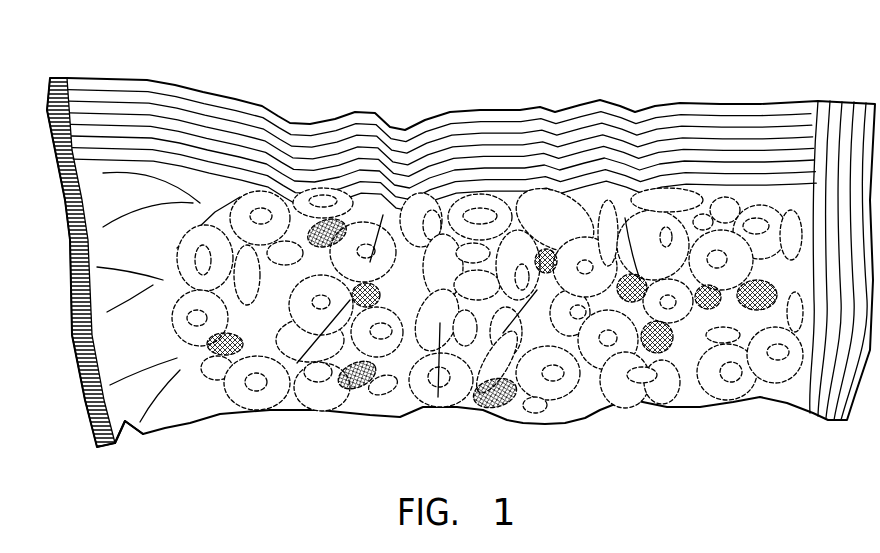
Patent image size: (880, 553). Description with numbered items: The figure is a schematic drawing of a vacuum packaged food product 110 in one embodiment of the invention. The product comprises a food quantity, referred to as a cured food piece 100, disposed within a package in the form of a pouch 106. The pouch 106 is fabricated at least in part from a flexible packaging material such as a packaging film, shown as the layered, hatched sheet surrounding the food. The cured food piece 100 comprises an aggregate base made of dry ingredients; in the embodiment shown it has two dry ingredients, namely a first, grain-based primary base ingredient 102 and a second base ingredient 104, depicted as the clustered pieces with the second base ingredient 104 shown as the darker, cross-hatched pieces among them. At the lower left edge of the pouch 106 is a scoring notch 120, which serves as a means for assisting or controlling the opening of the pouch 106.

The cured food piece 100 is at (197, 397).
The primary base ingredient 102 is at (258, 398).
The second base ingredient 104 is at (667, 352).
The pouch 106 is at (107, 291).
The vacuum packaged food product 110 is at (676, 82).
The scoring notch 120 is at (127, 440).